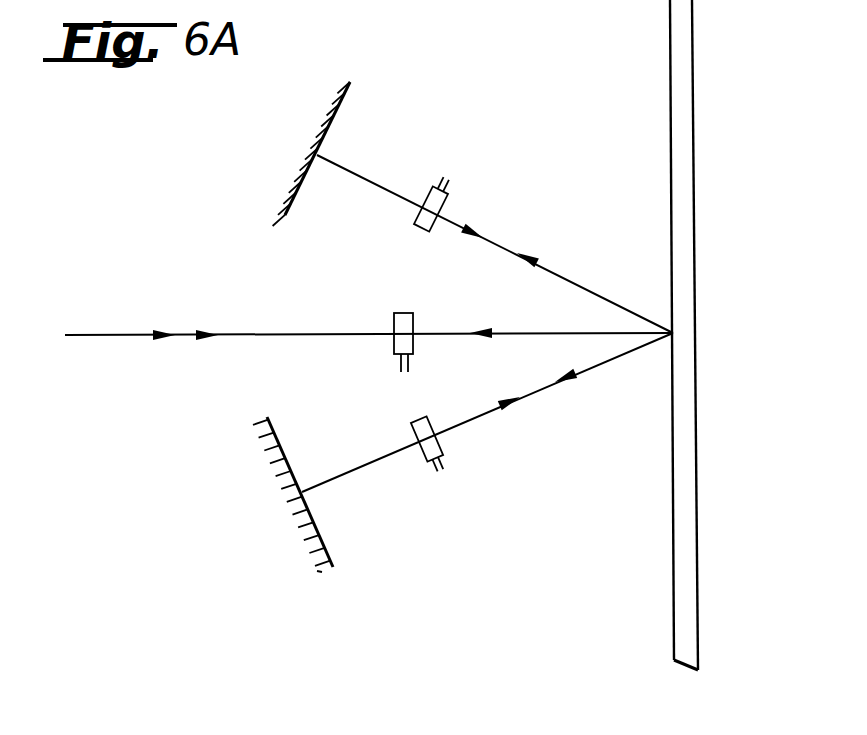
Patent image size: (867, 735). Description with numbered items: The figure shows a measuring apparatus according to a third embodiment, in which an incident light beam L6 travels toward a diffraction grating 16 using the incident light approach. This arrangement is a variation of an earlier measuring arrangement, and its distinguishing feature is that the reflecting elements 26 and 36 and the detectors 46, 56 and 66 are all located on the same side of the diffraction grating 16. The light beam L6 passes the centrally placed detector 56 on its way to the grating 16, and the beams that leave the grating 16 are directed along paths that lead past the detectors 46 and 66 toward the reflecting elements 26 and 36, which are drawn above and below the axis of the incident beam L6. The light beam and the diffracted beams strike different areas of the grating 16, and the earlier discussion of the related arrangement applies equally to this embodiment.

The diffraction grating 16 is at (687, 50).
The reflecting element 26 is at (307, 140).
The reflecting element 36 is at (288, 462).
The detector 46 is at (425, 198).
The detector 56 is at (397, 325).
The detector 66 is at (437, 449).
The light beam L6 is at (115, 333).